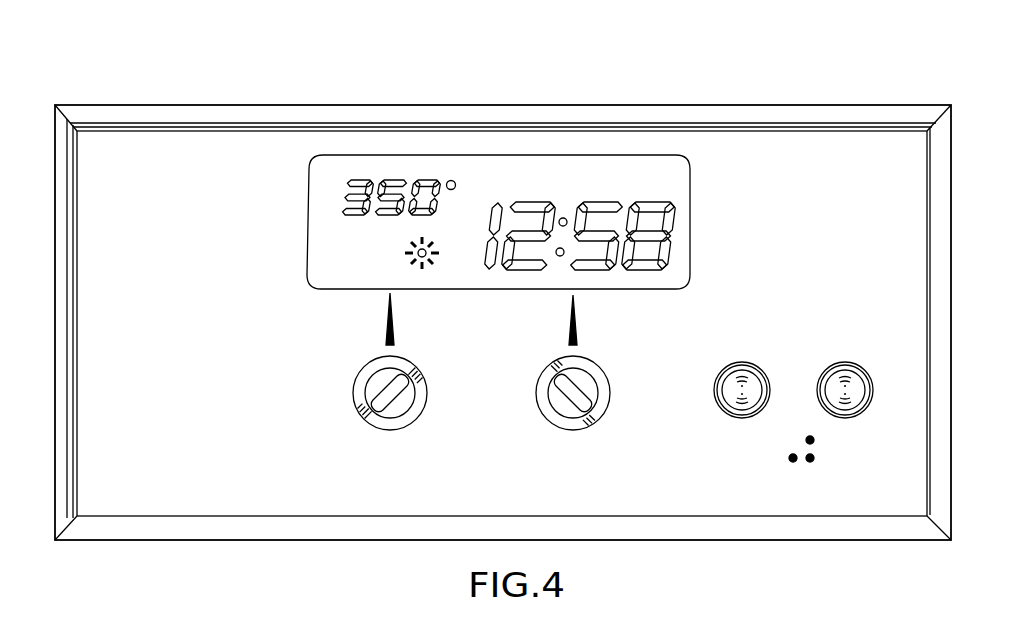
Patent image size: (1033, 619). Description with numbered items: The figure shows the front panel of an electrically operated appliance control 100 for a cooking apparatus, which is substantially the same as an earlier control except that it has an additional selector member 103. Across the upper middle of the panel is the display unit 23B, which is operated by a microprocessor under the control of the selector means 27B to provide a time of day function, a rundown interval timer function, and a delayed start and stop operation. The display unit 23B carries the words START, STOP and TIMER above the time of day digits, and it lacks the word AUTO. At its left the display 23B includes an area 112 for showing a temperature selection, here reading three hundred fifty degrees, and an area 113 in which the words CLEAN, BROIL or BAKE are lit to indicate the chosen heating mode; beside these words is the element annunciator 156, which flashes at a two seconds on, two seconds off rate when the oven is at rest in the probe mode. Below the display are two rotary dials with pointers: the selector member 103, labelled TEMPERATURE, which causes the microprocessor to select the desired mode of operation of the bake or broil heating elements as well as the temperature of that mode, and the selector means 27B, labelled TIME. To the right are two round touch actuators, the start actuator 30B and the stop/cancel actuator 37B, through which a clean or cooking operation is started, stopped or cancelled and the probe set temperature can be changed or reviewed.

The control 100 is at (503, 278).
The display unit 23B is at (692, 203).
The area for displaying a temperature selection 112 is at (404, 169).
The area for lighting up the words CLEAN, BROIL or BAKE 113 is at (331, 265).
The element annunciator 156 is at (428, 259).
The selector member 103 is at (370, 393).
The selector means 27B is at (608, 384).
The start actuator 30B is at (746, 371).
The stop/cancel actuator 37B is at (845, 371).